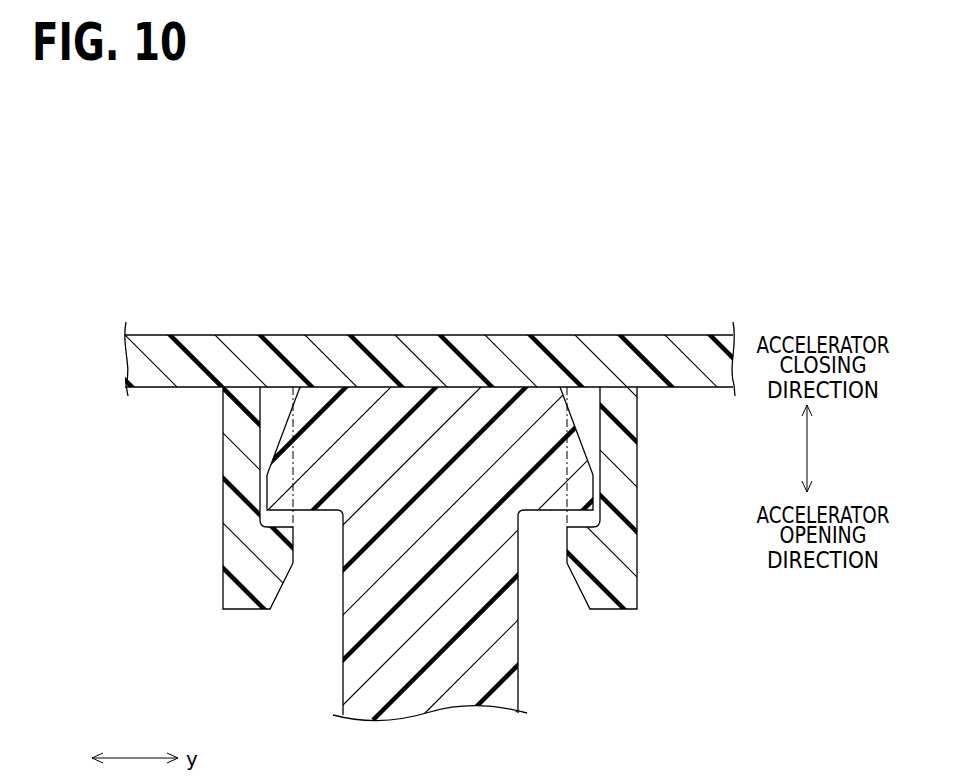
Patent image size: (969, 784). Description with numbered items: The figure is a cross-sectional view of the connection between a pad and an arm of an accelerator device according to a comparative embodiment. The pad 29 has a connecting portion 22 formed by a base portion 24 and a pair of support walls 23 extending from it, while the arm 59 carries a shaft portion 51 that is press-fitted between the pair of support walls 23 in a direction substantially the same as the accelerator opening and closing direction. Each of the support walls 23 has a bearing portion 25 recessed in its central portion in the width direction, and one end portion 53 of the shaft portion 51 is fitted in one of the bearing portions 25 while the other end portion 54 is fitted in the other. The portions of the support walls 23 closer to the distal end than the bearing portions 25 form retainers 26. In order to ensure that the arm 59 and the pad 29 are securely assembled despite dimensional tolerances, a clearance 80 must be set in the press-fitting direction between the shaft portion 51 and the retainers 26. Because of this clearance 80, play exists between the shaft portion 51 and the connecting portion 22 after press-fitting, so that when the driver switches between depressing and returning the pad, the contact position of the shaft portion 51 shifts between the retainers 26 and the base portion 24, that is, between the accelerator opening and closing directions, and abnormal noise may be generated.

The connecting portion 22 is at (616, 613).
The support walls 23 is at (232, 490).
The base portion 24 is at (483, 350).
The bearing portions 25 is at (278, 518).
The retainers 26 is at (280, 540).
The pad 29 is at (156, 335).
The shaft portion 51 is at (373, 432).
The one end portion 53 is at (580, 475).
The other end portion 54 is at (282, 472).
The arm 59 is at (338, 682).
The clearance 80 is at (295, 523).